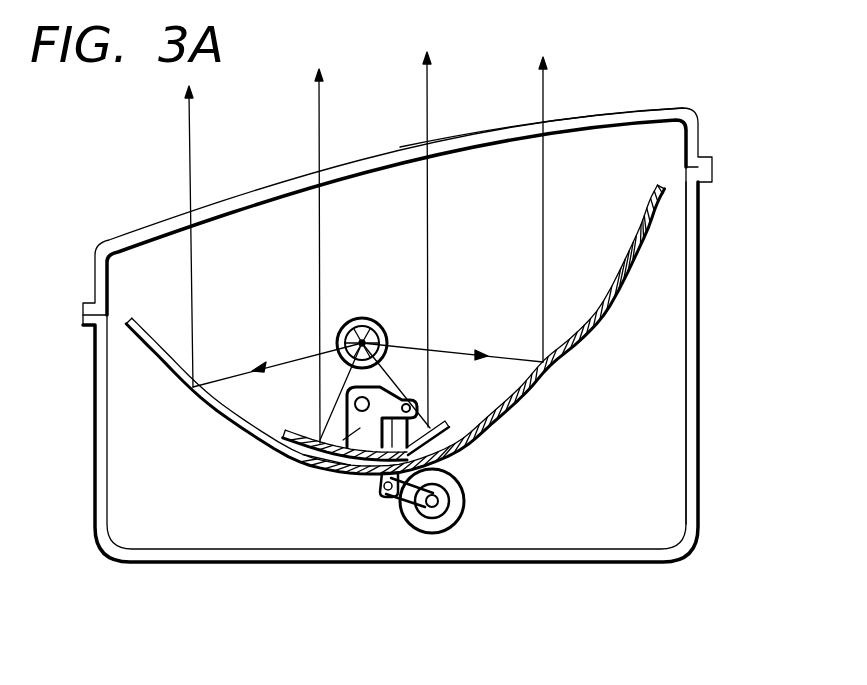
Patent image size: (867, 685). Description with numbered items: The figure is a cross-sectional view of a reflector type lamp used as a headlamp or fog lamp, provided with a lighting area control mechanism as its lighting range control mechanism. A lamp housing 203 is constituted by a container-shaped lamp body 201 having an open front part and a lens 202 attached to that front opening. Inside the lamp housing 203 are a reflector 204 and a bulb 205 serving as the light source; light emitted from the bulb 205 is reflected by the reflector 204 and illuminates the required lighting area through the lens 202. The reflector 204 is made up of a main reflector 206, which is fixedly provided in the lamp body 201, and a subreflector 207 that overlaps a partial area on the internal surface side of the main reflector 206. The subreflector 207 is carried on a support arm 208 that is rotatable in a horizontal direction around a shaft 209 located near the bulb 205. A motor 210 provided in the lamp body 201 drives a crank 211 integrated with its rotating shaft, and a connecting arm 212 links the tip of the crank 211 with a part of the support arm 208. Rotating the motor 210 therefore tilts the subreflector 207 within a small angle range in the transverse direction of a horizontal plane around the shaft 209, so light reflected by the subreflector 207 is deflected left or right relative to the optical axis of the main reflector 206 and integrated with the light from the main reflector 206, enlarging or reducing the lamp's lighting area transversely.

The lamp body 201 is at (623, 565).
The lens 202 is at (633, 107).
The lamp housing 203 is at (672, 431).
The reflector 204 is at (624, 283).
The bulb 205 is at (361, 317).
The main reflector 206 is at (520, 406).
The subreflector 207 is at (307, 432).
The support arm 208 is at (326, 470).
The shaft 209 is at (366, 402).
The motor 210 is at (445, 521).
The crank 211 is at (397, 517).
The connecting arm 212 is at (385, 482).